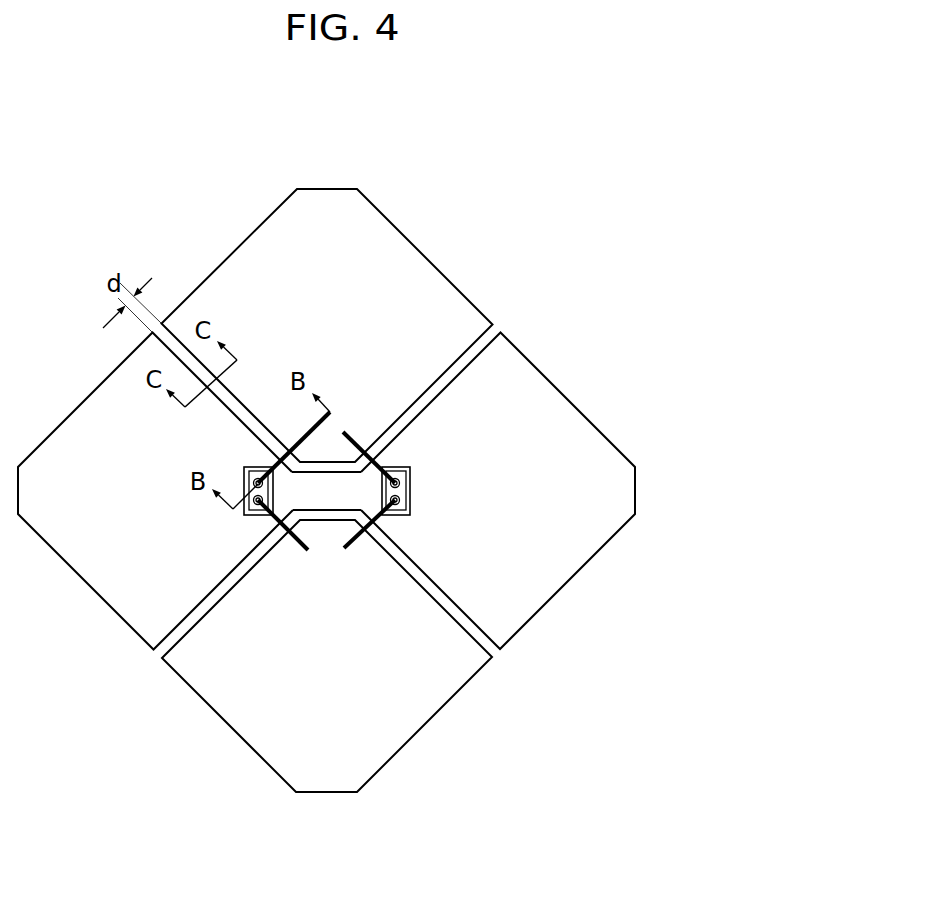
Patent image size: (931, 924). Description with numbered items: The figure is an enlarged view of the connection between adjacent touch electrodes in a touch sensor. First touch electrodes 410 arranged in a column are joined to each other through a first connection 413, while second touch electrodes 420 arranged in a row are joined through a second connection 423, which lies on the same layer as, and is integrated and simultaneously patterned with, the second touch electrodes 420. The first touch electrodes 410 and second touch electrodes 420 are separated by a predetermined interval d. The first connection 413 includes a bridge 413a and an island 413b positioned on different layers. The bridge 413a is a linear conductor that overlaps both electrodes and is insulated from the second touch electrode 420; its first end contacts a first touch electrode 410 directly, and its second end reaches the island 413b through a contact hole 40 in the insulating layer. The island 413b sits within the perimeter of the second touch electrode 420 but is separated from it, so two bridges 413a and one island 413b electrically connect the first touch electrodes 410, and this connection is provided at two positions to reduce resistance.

The contact hole 40 is at (403, 500).
The first touch electrode 410 is at (387, 252).
The second touch electrode 420 is at (583, 450).
The first connection 413 is at (527, 220).
The bridge 413a is at (355, 437).
The island 413b is at (400, 488).
The second connection 423 is at (328, 495).